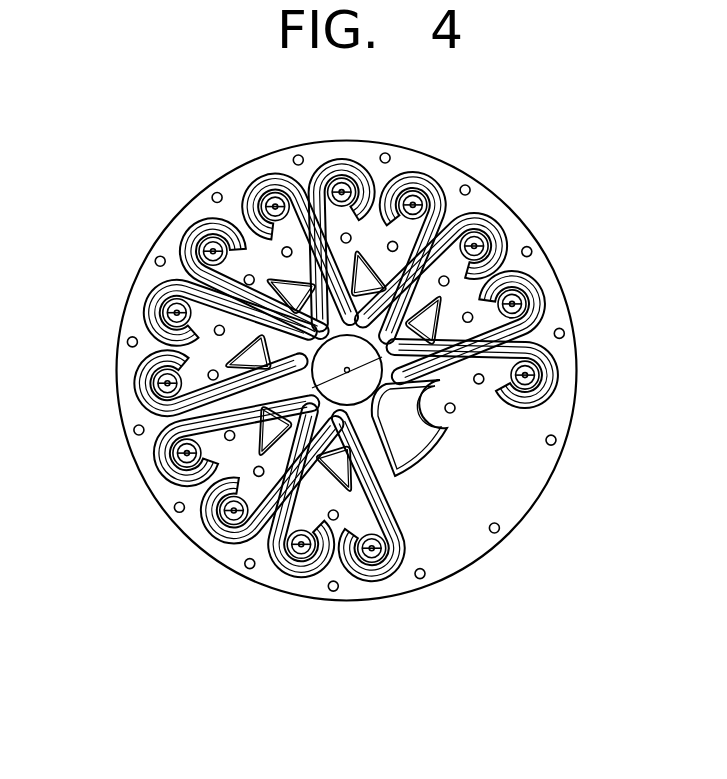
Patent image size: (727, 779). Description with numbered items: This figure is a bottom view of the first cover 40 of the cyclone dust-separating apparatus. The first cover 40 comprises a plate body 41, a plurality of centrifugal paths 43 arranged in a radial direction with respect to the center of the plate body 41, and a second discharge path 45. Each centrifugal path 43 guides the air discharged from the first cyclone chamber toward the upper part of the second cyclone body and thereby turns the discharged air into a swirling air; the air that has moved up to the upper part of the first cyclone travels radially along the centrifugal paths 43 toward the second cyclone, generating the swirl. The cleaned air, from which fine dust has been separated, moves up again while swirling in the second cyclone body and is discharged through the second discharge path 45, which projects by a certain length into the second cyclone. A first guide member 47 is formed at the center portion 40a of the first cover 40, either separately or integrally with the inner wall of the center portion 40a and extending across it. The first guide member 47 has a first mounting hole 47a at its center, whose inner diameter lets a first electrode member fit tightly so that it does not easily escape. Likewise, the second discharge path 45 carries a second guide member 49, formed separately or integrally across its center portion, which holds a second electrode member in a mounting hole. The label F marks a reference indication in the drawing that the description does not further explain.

The first cover 40 is at (460, 158).
The center portion 40a is at (337, 347).
The plate body 41 is at (520, 482).
The centrifugal path 43 is at (403, 517).
The second discharge path 45 is at (372, 562).
The first guide member 47 is at (331, 357).
The first mounting hole 47a is at (297, 393).
The second guide member 49 is at (381, 564).
The force direction F is at (350, 560).